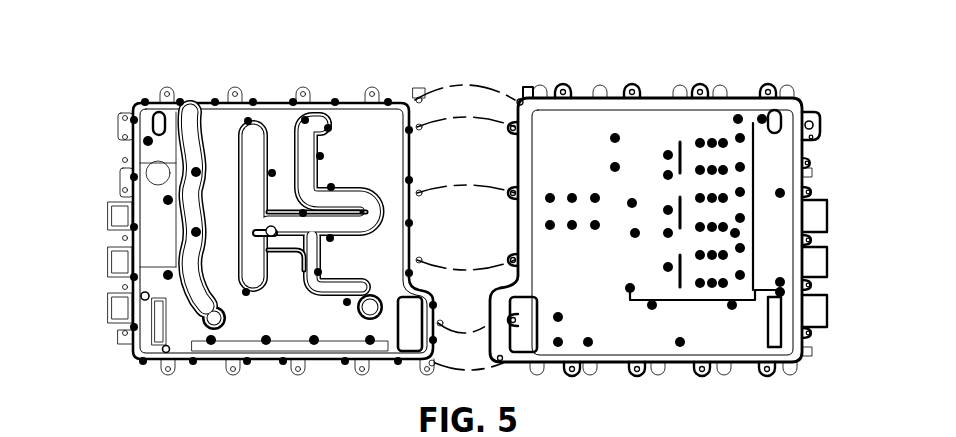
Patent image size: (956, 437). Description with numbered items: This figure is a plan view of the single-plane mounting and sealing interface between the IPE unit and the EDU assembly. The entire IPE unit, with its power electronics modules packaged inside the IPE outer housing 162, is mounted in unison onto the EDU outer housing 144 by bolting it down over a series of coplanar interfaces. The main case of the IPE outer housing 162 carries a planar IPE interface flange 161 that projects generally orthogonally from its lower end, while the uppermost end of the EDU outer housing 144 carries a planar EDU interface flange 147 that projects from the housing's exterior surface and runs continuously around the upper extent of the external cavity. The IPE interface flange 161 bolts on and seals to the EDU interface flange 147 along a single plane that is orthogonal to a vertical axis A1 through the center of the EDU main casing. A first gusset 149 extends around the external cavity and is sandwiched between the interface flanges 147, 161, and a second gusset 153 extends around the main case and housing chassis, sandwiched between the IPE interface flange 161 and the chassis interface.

The IPE outer housing 162 is at (101, 109).
The EDU outer housing 144 is at (845, 105).
The IPE interface flange 161 is at (133, 152).
The vertical axis A1 is at (265, 229).
The second gusset 153 is at (133, 311).
The EDU interface flange 147 is at (805, 153).
The first gusset 149 is at (805, 313).